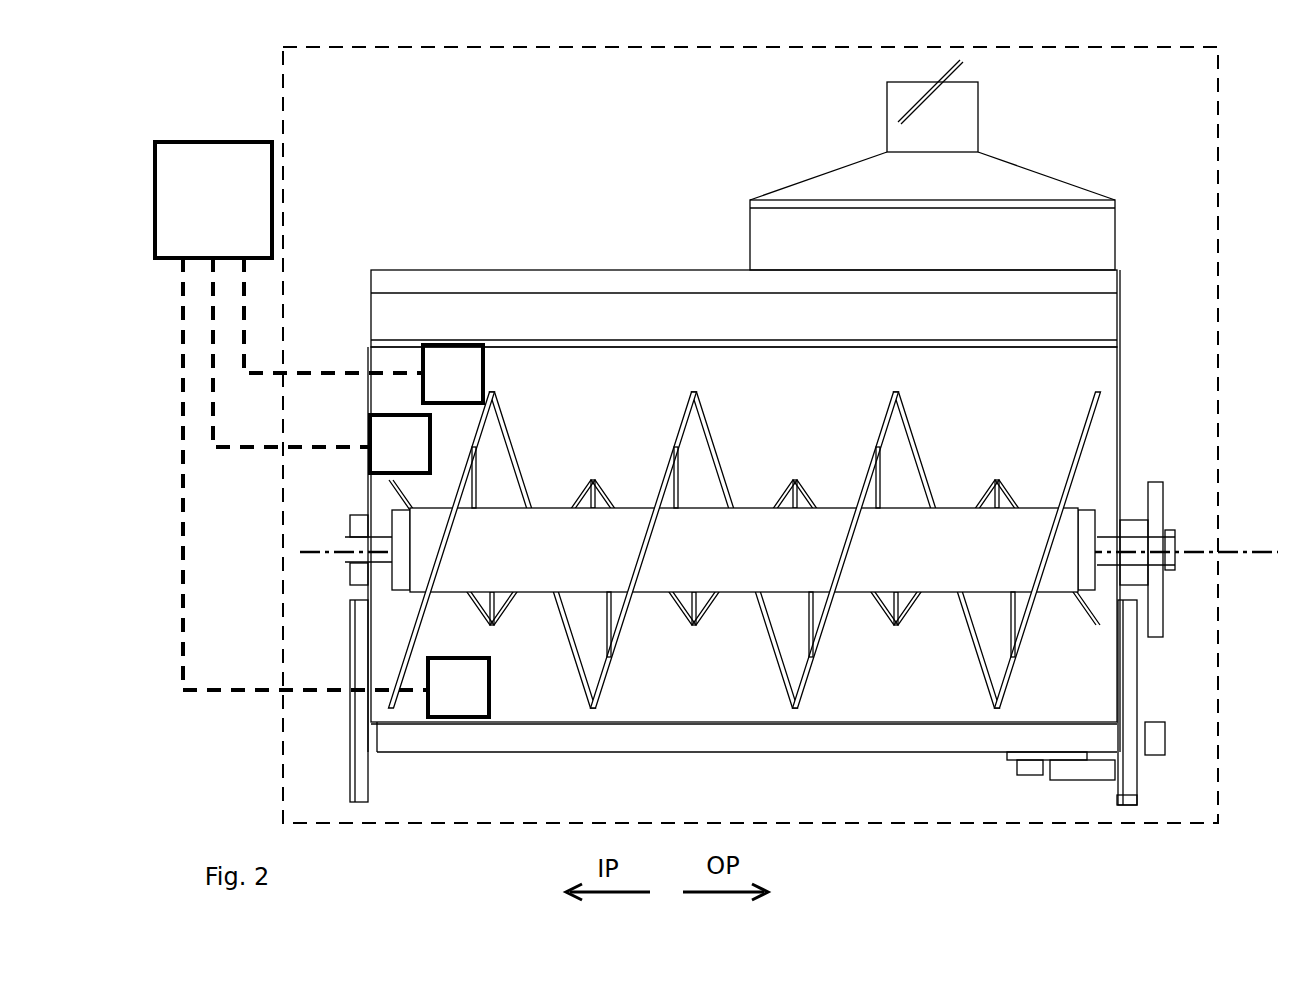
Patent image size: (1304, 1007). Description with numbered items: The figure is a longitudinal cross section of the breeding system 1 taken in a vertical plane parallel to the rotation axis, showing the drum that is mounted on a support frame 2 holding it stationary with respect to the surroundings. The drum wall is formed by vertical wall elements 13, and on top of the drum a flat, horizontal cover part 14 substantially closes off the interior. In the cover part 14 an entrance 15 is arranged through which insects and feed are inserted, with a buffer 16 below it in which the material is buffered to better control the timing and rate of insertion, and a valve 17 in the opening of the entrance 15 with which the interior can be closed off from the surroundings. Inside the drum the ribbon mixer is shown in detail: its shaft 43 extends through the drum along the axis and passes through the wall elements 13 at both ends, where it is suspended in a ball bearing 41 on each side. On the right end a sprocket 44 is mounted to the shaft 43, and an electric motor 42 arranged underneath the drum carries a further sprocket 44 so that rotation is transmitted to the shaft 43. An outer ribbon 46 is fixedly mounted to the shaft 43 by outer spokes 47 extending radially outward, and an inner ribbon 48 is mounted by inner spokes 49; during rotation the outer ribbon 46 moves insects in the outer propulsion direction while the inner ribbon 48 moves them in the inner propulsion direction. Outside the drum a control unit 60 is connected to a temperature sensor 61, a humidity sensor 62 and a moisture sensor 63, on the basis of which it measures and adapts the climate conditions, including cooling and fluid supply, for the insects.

The breeding system 1 is at (595, 72).
The support frame 2 is at (366, 795).
The wall element 13 is at (1116, 390).
The cover part 14 is at (468, 277).
The entrance 15 is at (1160, 677).
The buffer 16 is at (1100, 241).
The valve 17 is at (905, 112).
The ball bearing 41 is at (1127, 523).
The motor 42 is at (1127, 797).
The shaft 43 is at (932, 533).
The sprocket 44 is at (1160, 511).
The outer ribbon 46 is at (526, 490).
The outer spoke 47 is at (680, 470).
The inner ribbon 48 is at (877, 613).
The inner spoke 49 is at (697, 608).
The control unit 60 is at (291, 416).
The temperature sensor 61 is at (400, 444).
The humidity sensor 62 is at (453, 374).
The moisture sensor 63 is at (458, 687).